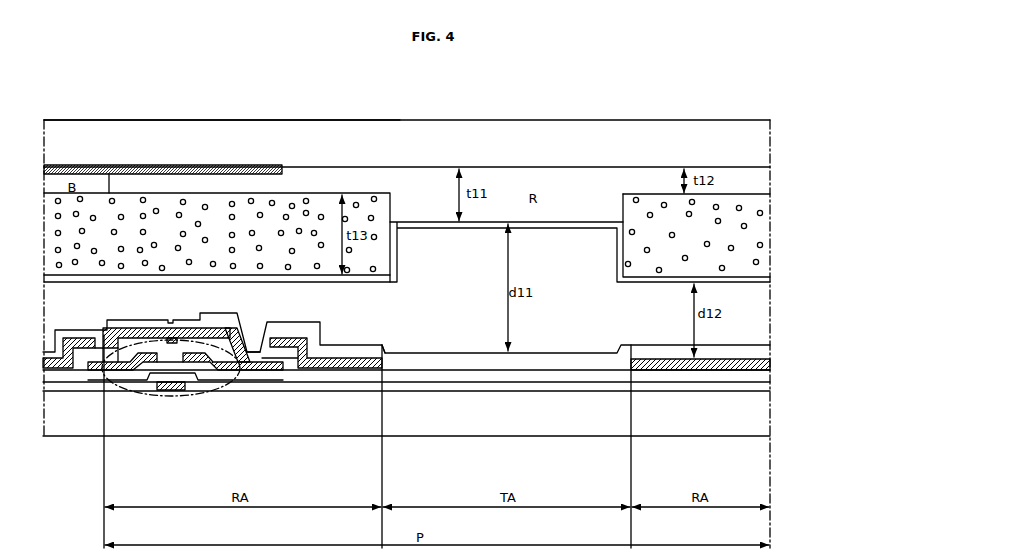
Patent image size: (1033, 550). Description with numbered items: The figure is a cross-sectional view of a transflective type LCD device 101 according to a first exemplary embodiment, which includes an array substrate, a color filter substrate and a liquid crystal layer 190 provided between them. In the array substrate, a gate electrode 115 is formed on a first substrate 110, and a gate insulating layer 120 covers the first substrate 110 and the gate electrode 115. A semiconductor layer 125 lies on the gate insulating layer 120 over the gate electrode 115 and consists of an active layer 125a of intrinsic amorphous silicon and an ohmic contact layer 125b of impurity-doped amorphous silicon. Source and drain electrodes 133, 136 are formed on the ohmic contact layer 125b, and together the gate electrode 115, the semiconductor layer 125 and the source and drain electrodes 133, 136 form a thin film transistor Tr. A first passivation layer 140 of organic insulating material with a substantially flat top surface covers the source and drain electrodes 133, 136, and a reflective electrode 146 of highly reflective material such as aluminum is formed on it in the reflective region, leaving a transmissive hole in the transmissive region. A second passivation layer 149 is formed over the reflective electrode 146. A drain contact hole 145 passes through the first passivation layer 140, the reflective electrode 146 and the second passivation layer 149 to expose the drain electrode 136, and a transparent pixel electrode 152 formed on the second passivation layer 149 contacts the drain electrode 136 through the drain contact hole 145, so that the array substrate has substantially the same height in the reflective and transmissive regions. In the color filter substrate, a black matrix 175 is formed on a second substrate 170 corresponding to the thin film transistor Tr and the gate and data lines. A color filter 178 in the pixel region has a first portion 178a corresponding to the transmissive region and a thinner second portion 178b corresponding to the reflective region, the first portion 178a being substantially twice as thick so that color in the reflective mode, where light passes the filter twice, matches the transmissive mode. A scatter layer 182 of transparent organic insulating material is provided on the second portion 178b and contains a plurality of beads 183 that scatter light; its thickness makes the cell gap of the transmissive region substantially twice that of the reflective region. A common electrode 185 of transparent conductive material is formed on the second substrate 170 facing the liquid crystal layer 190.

The transflective type LCD device 101 is at (718, 104).
The first substrate 110 is at (737, 428).
The gate electrode 115 is at (176, 392).
The gate insulating layer 120 is at (445, 389).
The semiconductor layer 125 is at (190, 422).
The active layer 125a is at (242, 374).
The ohmic contact layer 125b is at (258, 372).
The source electrode 133 is at (137, 352).
The drain electrode 136 is at (190, 352).
The first passivation layer 140 is at (317, 378).
The drain contact hole 145 is at (252, 346).
The reflective electrode 146 is at (350, 368).
The second passivation layer 149 is at (345, 352).
The pixel electrode 152 is at (383, 345).
The second substrate 170 is at (737, 150).
The black matrix 175 is at (217, 166).
The color filter 178 is at (407, 168).
The first portion 178a is at (507, 175).
The second portion 178b is at (650, 175).
The scatter layer 182 is at (641, 270).
The beads 183 is at (628, 263).
The common electrode 185 is at (485, 229).
The liquid crystal layer 190 is at (750, 302).
The thin film transistor Tr is at (141, 398).